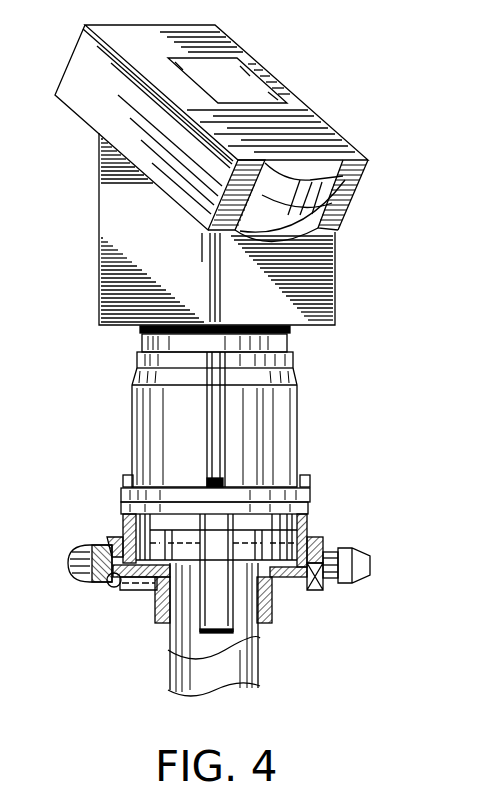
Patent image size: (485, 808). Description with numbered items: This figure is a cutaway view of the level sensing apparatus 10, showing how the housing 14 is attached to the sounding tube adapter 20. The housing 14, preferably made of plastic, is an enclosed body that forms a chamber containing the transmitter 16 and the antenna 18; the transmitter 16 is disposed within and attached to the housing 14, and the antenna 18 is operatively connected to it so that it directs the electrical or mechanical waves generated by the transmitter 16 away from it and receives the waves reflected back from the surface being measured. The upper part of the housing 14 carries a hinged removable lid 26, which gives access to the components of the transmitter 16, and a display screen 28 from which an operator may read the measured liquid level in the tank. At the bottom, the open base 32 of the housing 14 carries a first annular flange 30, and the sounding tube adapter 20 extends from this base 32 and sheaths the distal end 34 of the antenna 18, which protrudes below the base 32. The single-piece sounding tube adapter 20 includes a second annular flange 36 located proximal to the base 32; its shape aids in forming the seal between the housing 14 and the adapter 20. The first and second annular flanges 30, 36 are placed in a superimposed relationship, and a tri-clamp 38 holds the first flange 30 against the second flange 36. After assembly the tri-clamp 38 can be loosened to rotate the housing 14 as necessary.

The level sensing apparatus 10 is at (412, 363).
The housing 14 is at (137, 222).
The transmitter 16 is at (300, 487).
The antenna 18 is at (213, 558).
The sounding tube adapter 20 is at (162, 670).
The hinged removable lid 26 is at (293, 122).
The display screen 28 is at (232, 82).
The first annular flange 30 is at (112, 538).
The base 32 is at (260, 553).
The distal end 34 is at (210, 623).
The second annular flange 36 is at (113, 585).
The tri-clamp 38 is at (365, 542).